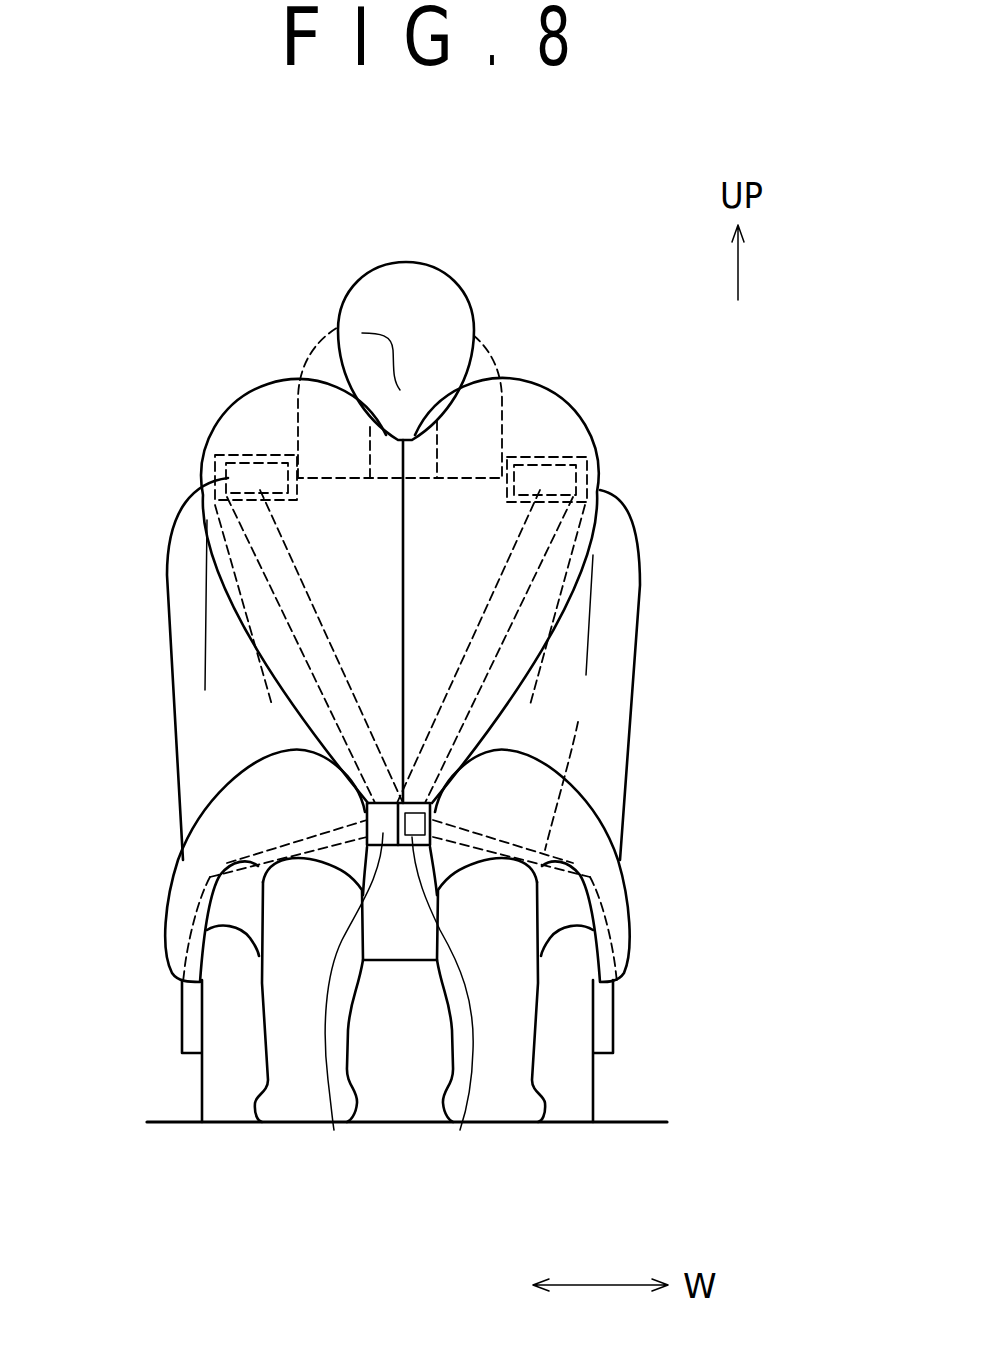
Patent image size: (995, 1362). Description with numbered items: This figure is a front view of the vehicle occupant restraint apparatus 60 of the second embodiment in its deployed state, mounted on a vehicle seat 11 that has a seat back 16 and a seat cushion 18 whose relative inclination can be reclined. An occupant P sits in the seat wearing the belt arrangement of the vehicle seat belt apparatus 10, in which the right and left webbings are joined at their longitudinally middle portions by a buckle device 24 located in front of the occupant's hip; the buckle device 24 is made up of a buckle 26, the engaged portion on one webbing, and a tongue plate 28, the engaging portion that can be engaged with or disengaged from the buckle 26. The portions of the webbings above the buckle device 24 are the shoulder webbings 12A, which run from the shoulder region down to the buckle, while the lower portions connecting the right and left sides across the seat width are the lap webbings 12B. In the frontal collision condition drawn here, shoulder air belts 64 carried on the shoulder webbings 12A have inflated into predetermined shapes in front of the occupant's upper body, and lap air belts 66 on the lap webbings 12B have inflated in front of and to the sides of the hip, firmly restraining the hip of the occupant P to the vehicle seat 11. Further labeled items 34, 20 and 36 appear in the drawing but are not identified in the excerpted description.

The vehicle seat belt apparatus 10 is at (476, 712).
The vehicle seat 11 is at (657, 589).
The seat back 16 is at (618, 618).
The seat cushion 18 is at (556, 1103).
The headrest 34 is at (323, 347).
The occupant P is at (478, 278).
The vehicle occupant restraint apparatus 60 is at (403, 634).
The shoulder air belts 64 is at (263, 423).
The lap air belts 66 is at (232, 813).
The shoulder belt anchor 20 is at (215, 453).
The shoulder webbings 12A is at (467, 670).
The lap webbings 12B is at (340, 845).
The lap belt anchor 36 is at (193, 912).
The buckle device 24 is at (390, 1032).
The buckle 26 is at (439, 1003).
The tongue plate 28 is at (334, 1130).